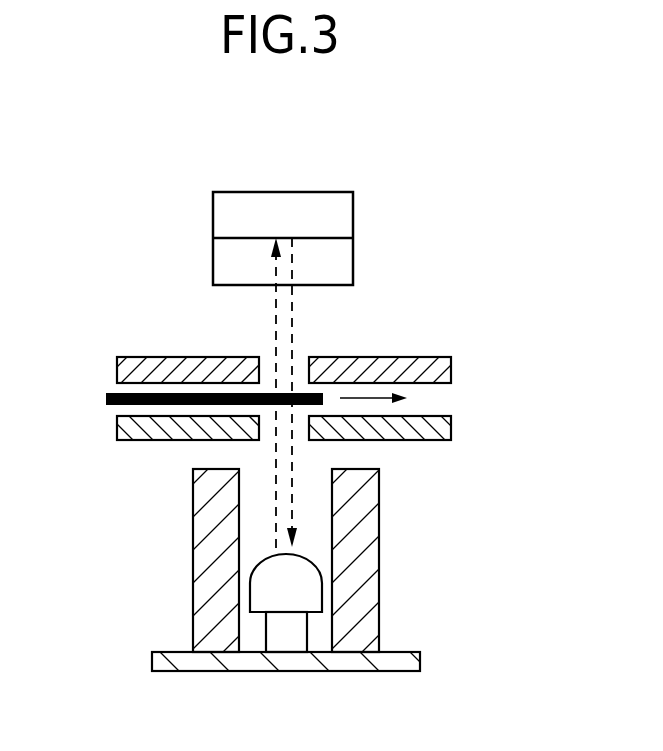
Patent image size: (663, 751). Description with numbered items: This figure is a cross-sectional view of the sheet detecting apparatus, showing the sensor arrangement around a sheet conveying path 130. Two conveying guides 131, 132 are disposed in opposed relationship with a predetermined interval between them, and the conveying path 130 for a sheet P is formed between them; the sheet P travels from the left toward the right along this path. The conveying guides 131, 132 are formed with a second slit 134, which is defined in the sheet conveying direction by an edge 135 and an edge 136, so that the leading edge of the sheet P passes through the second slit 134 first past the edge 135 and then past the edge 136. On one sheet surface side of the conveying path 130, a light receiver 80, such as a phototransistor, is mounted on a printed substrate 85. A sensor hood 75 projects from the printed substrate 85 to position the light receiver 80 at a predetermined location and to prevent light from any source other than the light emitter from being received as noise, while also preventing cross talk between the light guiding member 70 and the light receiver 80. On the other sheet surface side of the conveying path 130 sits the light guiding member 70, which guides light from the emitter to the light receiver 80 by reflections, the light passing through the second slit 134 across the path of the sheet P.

The light guiding member 70 is at (278, 200).
The sensor hood 75 is at (193, 578).
The light receiver 80 is at (295, 626).
The printed substrate 85 is at (152, 661).
The sheet conveying path 130 is at (115, 385).
The conveying guide 131 is at (452, 366).
The conveying guide 132 is at (452, 427).
The second slit 134 is at (301, 358).
The edge 135 is at (256, 356).
The edge 136 is at (308, 360).
The sheet P is at (107, 398).